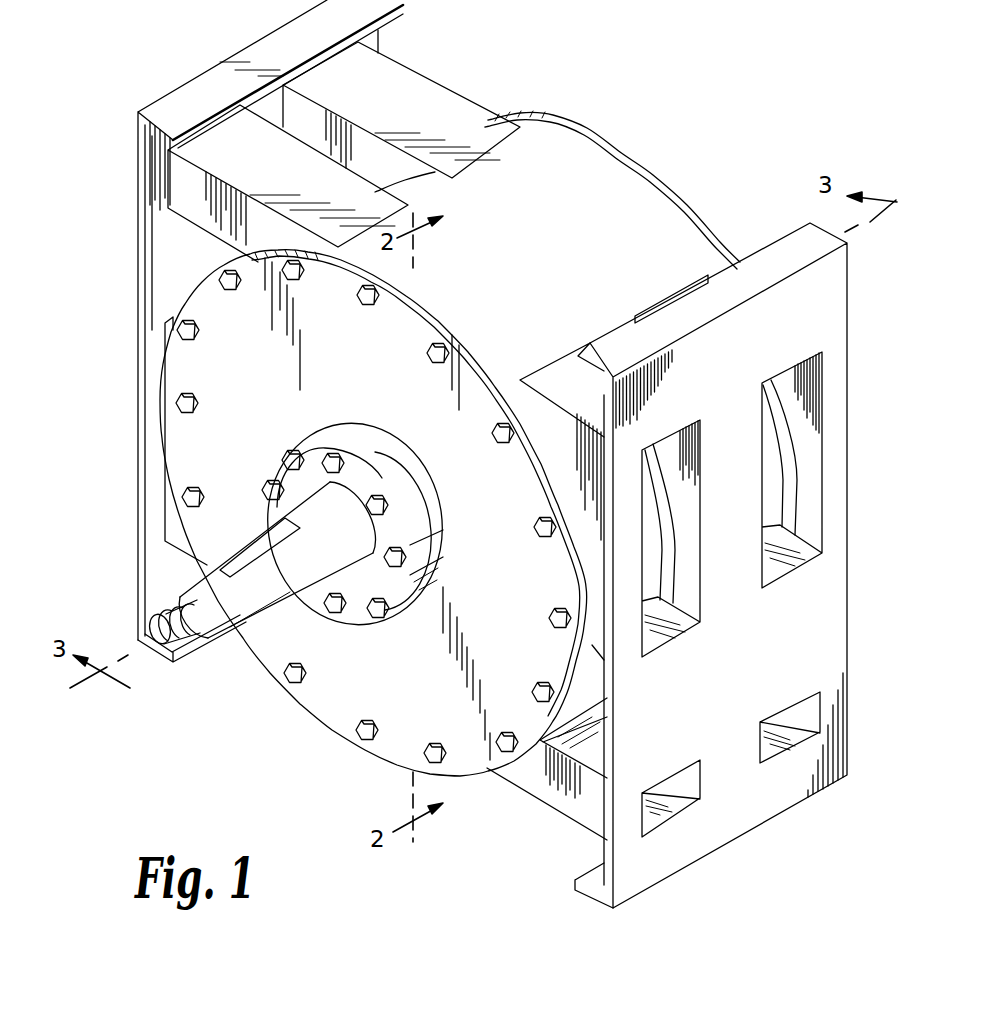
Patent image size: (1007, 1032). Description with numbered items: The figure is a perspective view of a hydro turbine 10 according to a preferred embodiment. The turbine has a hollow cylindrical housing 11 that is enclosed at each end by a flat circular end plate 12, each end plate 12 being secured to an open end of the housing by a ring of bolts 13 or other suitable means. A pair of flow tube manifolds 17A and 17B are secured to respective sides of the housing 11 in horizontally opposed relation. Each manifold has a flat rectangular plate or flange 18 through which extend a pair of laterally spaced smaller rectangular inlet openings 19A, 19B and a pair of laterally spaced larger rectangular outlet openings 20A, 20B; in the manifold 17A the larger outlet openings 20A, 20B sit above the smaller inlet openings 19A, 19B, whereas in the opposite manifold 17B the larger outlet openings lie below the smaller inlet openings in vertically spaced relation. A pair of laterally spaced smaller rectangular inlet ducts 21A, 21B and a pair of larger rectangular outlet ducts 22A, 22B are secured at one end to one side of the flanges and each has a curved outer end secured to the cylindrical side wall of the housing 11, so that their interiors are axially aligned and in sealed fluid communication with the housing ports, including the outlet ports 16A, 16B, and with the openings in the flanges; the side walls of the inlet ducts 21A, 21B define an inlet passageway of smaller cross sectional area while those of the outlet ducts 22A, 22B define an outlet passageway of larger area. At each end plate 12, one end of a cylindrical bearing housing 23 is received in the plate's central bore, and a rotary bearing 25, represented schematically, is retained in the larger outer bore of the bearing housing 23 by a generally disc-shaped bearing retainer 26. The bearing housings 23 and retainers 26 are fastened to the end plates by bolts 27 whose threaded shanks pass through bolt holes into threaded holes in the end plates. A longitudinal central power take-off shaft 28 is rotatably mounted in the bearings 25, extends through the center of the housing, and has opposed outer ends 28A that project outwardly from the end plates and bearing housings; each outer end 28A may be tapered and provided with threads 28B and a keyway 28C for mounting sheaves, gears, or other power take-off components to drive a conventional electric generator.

The hydro turbine 10 is at (644, 124).
The hollow cylindrical housing 11 is at (560, 150).
The end plate 12 is at (211, 298).
The bolts 13 is at (283, 287).
The outlet port 16A is at (652, 540).
The outlet port 16B is at (772, 477).
The flow tube manifold 17A is at (806, 303).
The flow tube manifold 17B is at (137, 189).
The flat rectangular plate or flange 18 is at (133, 253).
The inlet opening 19A is at (183, 172).
The inlet opening 19B is at (347, 65).
The outlet opening 20A is at (683, 470).
The outlet opening 20B is at (807, 367).
The inlet duct 21A is at (298, 185).
The inlet duct 21B is at (425, 125).
The outlet duct 22A is at (572, 460).
The outlet duct 22B is at (668, 305).
The cylindrical bearing housing 23 is at (388, 448).
The rotary bearing 25 is at (277, 464).
The bearing retainer 26 is at (363, 613).
The bolts 27 is at (328, 463).
The power take-off shaft 28 is at (357, 537).
The outer end 28A is at (251, 600).
The threads 28B is at (138, 596).
The keyway 28C is at (258, 534).